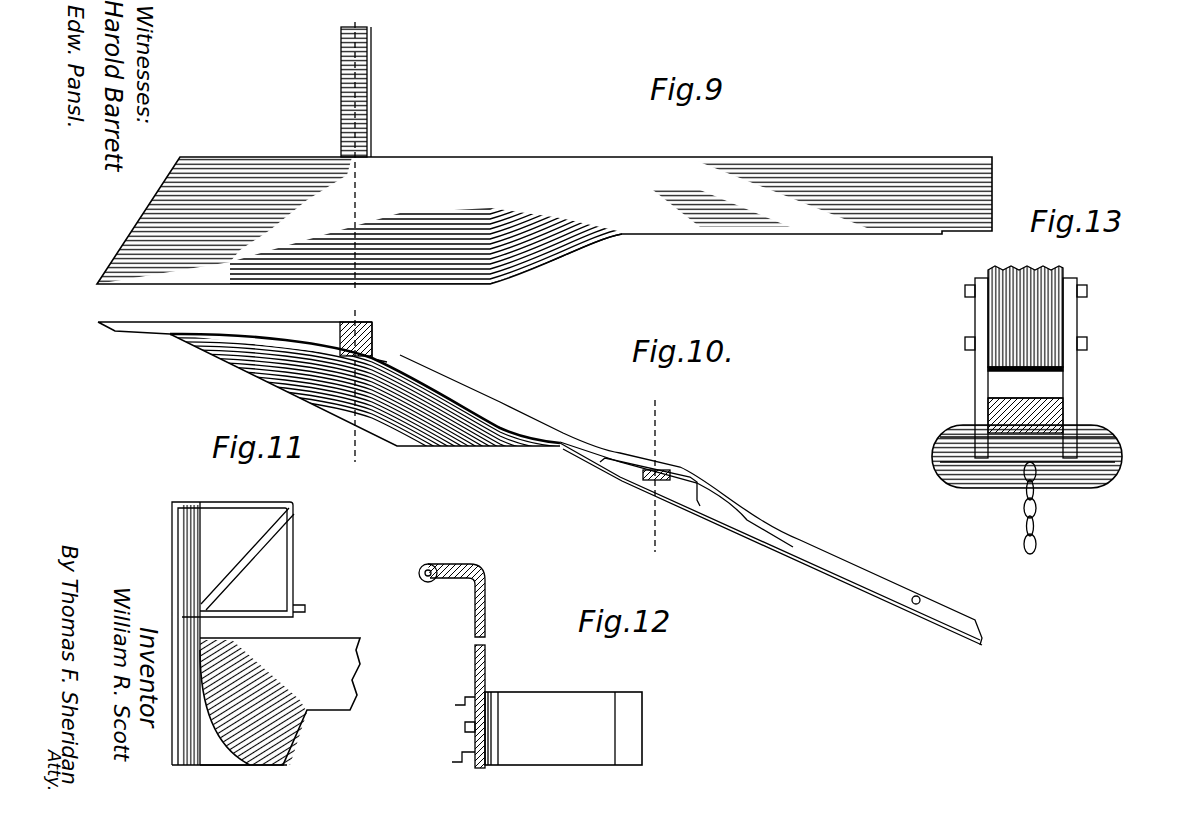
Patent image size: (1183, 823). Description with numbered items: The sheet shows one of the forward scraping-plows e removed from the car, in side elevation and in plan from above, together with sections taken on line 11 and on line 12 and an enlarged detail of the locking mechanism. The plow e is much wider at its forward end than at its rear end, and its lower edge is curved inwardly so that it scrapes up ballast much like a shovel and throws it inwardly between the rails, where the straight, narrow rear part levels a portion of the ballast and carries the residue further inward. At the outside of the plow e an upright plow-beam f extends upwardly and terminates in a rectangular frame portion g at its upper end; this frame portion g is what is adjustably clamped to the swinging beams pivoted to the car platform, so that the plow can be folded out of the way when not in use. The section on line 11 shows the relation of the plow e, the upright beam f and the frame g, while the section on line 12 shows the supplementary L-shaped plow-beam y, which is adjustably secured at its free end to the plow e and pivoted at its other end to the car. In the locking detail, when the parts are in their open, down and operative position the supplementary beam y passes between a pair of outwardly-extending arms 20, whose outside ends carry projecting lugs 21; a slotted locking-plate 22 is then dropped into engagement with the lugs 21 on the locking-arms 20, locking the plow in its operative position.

In FIG. 9, the scraping-plow e is at (549, 158).
In FIG. 10, the scraping-plow e is at (497, 435).
In FIG. 11, the scraping-plow e is at (280, 701).
In FIG. 12, the scraping-plow e is at (547, 728).
In FIG. 9, the upright plow-beam f is at (371, 77).
In FIG. 10, the upright plow-beam f is at (376, 340).
In FIG. 11, the upright plow-beam f is at (172, 562).
In FIG. 11, the rectangular frame portion g is at (256, 560).
In FIG. 12, the supplementary L-shaped plow-beam y is at (485, 666).
In FIG. 13, the supplementary L-shaped plow-beam y is at (985, 413).
In FIG. 9, the section line 11 is at (372, 21).
In FIG. 10, the section line 11 is at (356, 398).
In FIG. 10, the section line 12 is at (673, 429).
In FIG. 13, the outwardly-extending arms 20 is at (1120, 392).
In FIG. 13, the projecting lugs 21 is at (1080, 455).
In FIG. 13, the slotted locking-plate 22 is at (1075, 488).